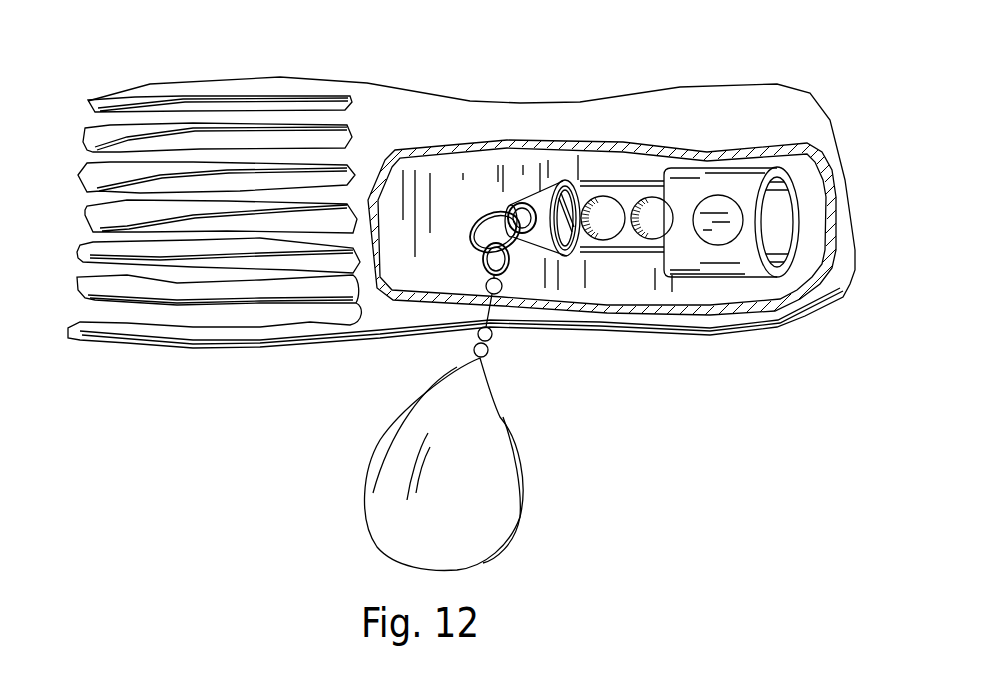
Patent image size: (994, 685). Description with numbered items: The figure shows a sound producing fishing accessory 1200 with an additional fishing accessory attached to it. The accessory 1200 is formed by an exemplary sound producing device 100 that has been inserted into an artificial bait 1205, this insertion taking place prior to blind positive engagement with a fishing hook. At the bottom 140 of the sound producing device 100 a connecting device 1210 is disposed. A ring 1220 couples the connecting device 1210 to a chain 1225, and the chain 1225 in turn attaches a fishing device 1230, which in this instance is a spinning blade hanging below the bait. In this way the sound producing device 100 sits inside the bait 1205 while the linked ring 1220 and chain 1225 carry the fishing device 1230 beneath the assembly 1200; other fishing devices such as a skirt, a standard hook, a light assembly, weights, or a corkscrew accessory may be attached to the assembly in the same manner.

The sound producing fishing accessory 1200 is at (340, 54).
The artificial bait 1205 is at (490, 136).
The connecting device 1210 is at (538, 185).
The bottom 140 is at (562, 257).
The sound producing device 100 is at (727, 302).
The ring 1220 is at (472, 258).
The chain 1225 is at (490, 347).
The fishing device 1230 is at (490, 487).